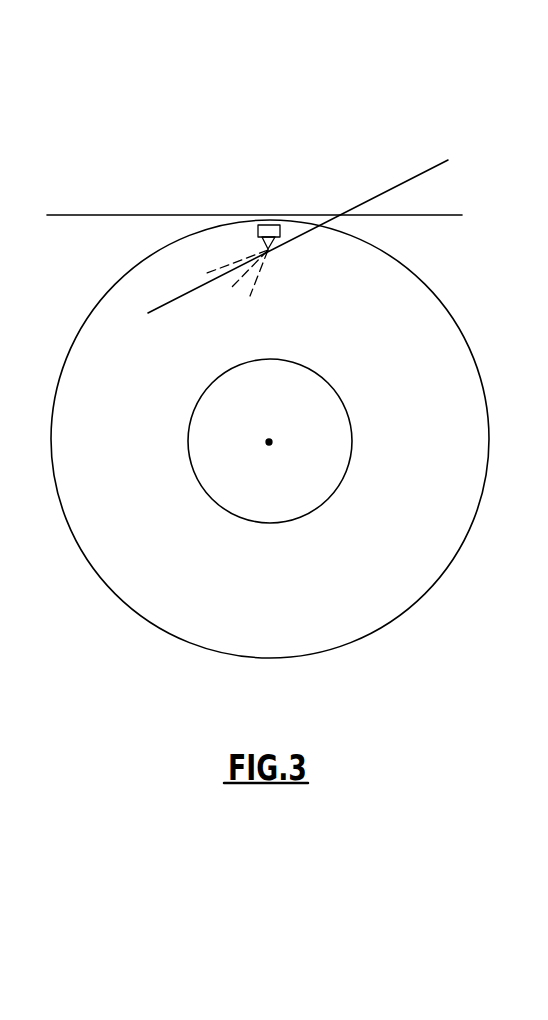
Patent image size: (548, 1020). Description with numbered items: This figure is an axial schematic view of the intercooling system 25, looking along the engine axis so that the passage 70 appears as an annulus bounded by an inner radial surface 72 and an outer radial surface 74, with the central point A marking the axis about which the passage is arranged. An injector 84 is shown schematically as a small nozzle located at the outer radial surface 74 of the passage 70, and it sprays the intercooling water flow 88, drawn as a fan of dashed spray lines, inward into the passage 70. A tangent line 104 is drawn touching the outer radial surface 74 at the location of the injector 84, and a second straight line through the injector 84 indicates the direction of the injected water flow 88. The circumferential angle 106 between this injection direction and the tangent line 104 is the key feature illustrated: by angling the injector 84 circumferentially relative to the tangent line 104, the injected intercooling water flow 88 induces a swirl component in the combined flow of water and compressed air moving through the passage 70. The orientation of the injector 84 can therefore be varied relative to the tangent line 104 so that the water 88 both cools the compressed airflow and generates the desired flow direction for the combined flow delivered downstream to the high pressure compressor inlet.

The intercooling system 25 is at (386, 154).
The passage 70 is at (468, 340).
The inner radial surface 72 is at (364, 456).
The outer radial surface 74 is at (476, 397).
The injector 84 is at (262, 232).
The intercooling water flow 88 is at (267, 283).
The tangent line 104 is at (423, 216).
The circumferential angle 106 is at (441, 165).
The axis of roll A is at (271, 439).